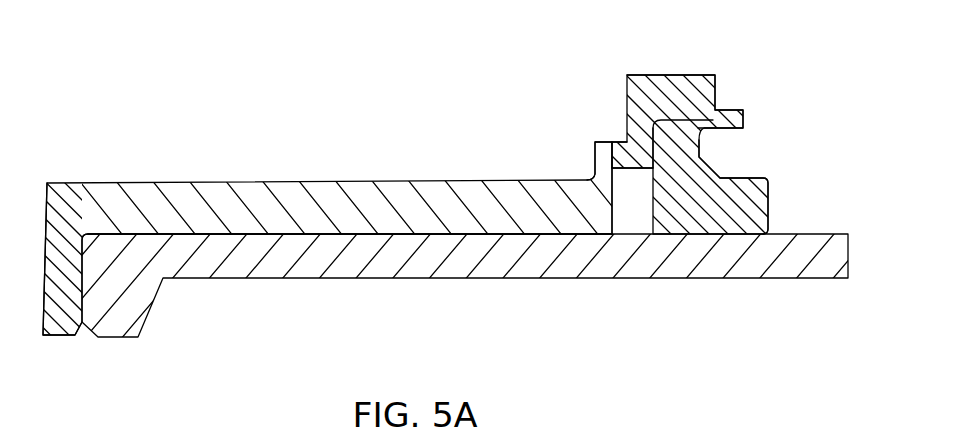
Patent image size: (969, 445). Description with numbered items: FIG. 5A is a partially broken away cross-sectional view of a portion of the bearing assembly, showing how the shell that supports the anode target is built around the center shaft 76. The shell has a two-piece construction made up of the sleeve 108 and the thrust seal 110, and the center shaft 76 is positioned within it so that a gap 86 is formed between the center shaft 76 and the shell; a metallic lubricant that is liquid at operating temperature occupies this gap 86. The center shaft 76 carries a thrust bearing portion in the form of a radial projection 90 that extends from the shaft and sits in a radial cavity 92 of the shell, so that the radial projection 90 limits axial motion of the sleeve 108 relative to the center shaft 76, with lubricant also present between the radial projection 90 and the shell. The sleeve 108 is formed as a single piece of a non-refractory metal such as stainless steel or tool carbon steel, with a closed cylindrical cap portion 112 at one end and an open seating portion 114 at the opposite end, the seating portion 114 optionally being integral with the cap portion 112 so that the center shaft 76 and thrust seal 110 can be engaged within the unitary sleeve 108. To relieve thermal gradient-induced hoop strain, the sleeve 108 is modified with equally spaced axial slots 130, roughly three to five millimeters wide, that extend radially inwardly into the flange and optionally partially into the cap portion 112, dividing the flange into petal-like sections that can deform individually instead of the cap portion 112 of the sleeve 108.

The center shaft 76 is at (277, 260).
The gap 86 is at (337, 232).
The radial projection 90 is at (592, 167).
The radial cavity 92 is at (650, 145).
The sleeve 108 is at (268, 175).
The thrust seal 110 is at (749, 170).
The cap portion 112 is at (126, 181).
The seating portion 114 is at (690, 72).
The slots 130 is at (623, 142).